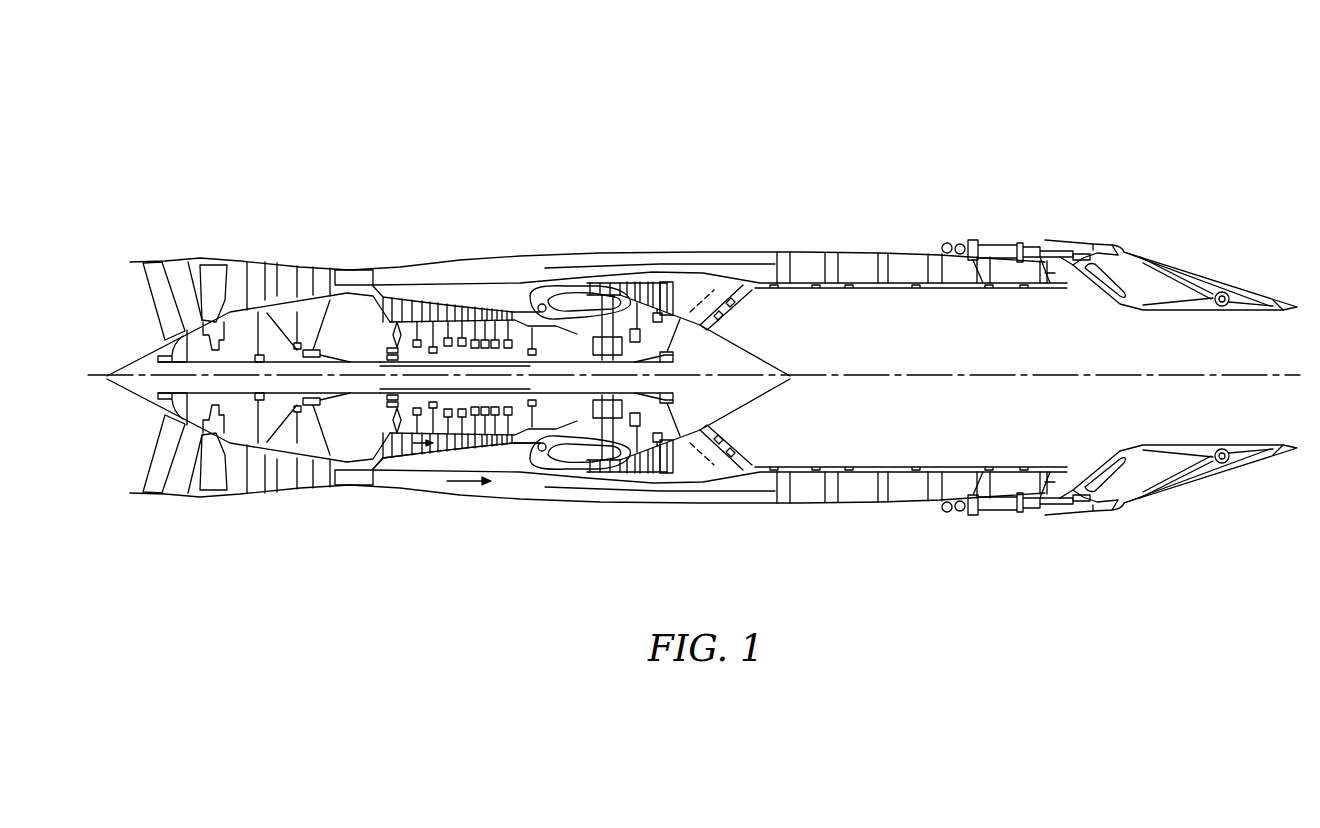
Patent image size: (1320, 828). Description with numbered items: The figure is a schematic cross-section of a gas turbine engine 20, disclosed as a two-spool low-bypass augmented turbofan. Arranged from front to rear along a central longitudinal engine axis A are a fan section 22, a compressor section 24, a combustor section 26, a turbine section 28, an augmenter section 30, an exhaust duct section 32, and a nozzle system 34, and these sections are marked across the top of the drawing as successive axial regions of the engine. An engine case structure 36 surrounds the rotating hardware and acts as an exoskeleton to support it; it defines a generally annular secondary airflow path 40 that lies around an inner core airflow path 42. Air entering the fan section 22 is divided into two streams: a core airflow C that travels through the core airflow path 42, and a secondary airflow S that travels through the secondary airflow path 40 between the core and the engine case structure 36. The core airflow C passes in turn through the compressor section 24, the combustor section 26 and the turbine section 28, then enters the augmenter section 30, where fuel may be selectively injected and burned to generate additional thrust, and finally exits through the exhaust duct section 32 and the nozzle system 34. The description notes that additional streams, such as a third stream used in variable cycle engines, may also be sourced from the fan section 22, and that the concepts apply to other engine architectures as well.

The gas turbine engine 20 is at (958, 100).
The fan section 22 is at (130, 195).
The compressor section 24 is at (536, 195).
The combustor section 26 is at (536, 195).
The turbine section 28 is at (678, 195).
The augmenter section 30 is at (678, 195).
The exhaust duct section 32 is at (1058, 195).
The nozzle system 34 is at (1295, 195).
The engine case structure 36 is at (537, 503).
The secondary airflow path 40 is at (408, 478).
The core airflow path 42 is at (333, 478).
The central longitudinal engine axis A is at (1130, 378).
The core airflow C is at (403, 450).
The secondary airflow S is at (467, 479).